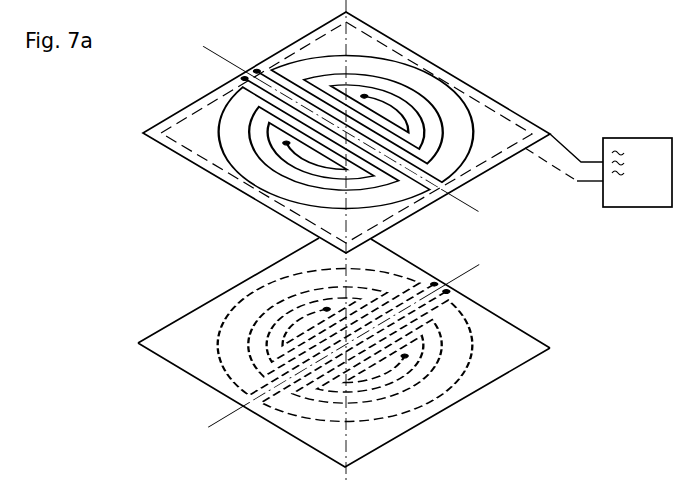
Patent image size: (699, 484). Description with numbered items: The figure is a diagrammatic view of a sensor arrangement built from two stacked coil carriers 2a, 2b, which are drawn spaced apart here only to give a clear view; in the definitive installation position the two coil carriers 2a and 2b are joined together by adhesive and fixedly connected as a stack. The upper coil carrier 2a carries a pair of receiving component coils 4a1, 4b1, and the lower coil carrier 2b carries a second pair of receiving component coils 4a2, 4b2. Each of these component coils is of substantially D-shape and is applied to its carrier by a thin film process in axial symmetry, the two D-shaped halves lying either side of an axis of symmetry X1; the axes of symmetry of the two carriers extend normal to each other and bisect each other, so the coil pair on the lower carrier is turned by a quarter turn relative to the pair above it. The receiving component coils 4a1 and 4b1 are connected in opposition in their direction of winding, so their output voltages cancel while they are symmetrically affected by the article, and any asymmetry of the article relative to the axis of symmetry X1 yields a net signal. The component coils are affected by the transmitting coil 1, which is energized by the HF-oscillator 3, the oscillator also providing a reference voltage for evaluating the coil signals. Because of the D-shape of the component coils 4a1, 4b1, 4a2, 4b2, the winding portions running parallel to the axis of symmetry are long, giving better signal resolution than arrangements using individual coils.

The transmitting coil 1 is at (455, 80).
The coil carrier 2a is at (363, 38).
The coil carrier 2b is at (362, 448).
The HF-oscillator 3 is at (598, 170).
The receiving component coil 4a1 is at (225, 155).
The receiving component coil 4b1 is at (473, 152).
The receiving component coil 4a2 is at (227, 322).
The receiving component coil 4b2 is at (467, 322).
The axis of symmetry X1 is at (344, 228).